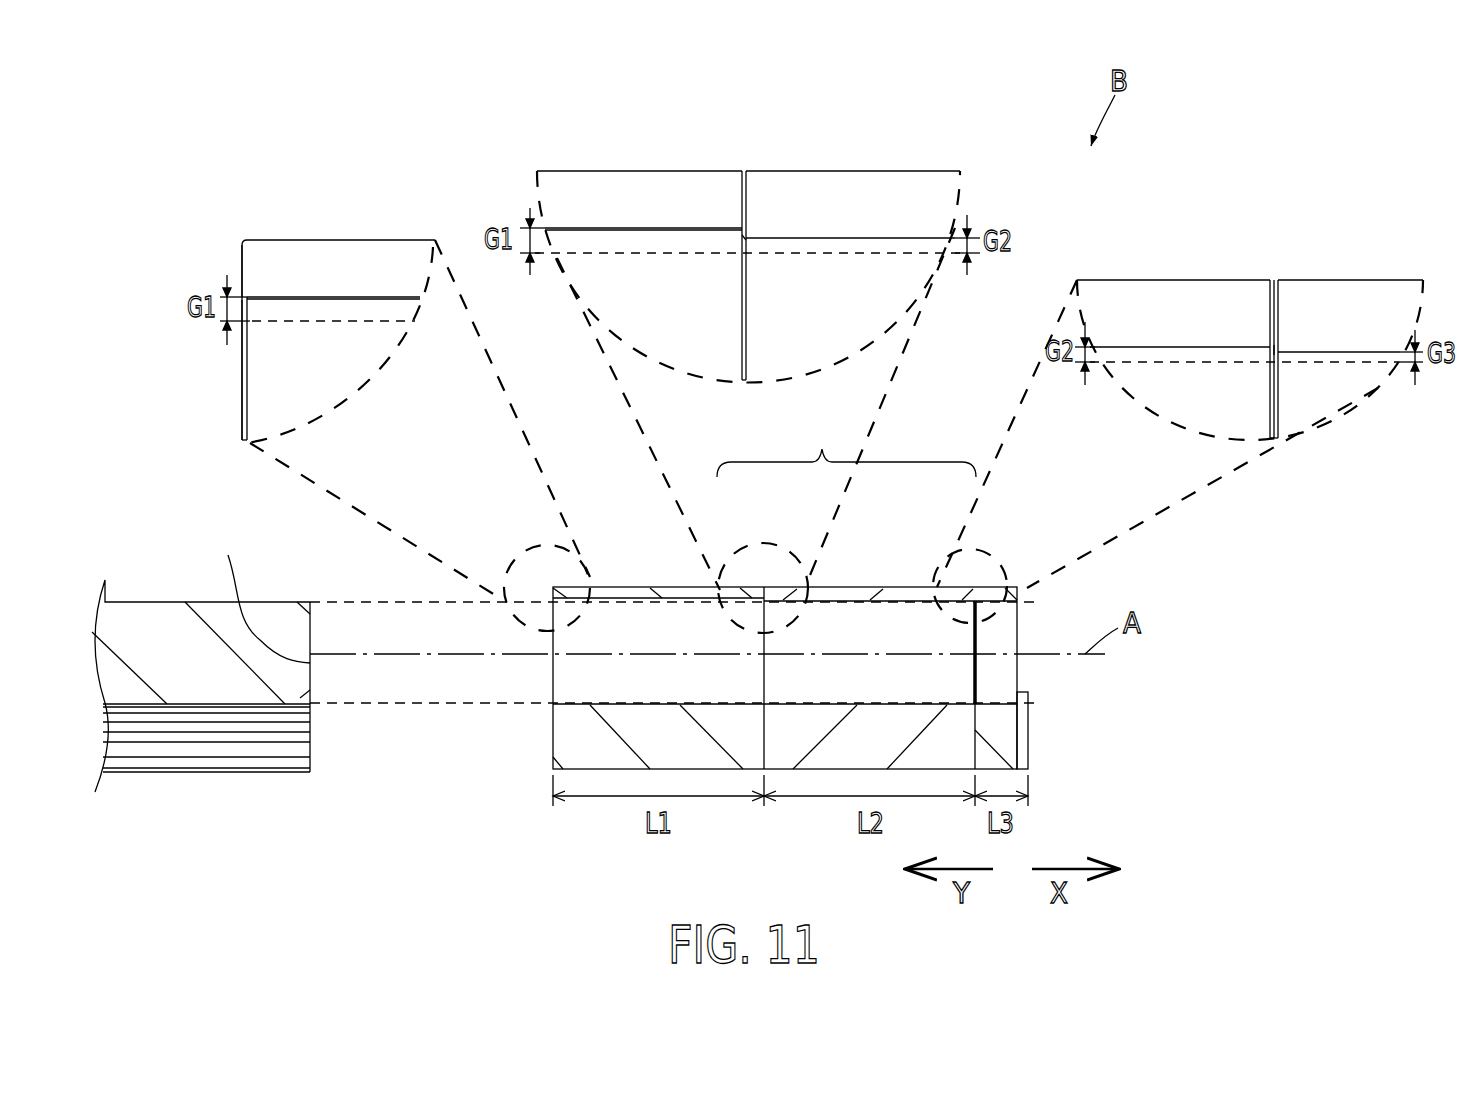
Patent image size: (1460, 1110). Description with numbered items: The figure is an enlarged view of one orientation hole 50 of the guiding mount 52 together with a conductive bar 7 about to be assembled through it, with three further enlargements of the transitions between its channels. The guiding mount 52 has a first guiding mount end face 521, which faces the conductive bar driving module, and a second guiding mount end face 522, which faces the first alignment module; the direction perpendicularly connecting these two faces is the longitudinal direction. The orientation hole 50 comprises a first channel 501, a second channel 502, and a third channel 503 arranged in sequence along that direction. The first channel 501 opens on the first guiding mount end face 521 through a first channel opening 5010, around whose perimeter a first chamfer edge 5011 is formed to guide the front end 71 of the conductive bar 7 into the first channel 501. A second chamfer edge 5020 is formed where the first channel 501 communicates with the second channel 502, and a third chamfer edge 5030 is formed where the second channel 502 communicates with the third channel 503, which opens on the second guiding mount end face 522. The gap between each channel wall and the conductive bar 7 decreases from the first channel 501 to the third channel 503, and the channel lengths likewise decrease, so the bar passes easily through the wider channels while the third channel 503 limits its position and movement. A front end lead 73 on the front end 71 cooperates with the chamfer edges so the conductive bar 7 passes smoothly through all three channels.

The conductive bar 7 is at (148, 632).
The front end 71 is at (260, 592).
The front end lead 73 is at (300, 600).
The orientation hole 50 is at (846, 441).
The first channel 501 is at (684, 618).
The first channel opening 5010 is at (240, 402).
The first chamfer edge 5011 is at (248, 297).
The second channel 502 is at (883, 620).
The second chamfer edge 5020 is at (746, 236).
The third channel 503 is at (993, 620).
The third chamfer edge 5030 is at (1278, 350).
The guiding mount 52 is at (953, 730).
The first guiding mount end face 521 is at (553, 737).
The second guiding mount end face 522 is at (1020, 747).